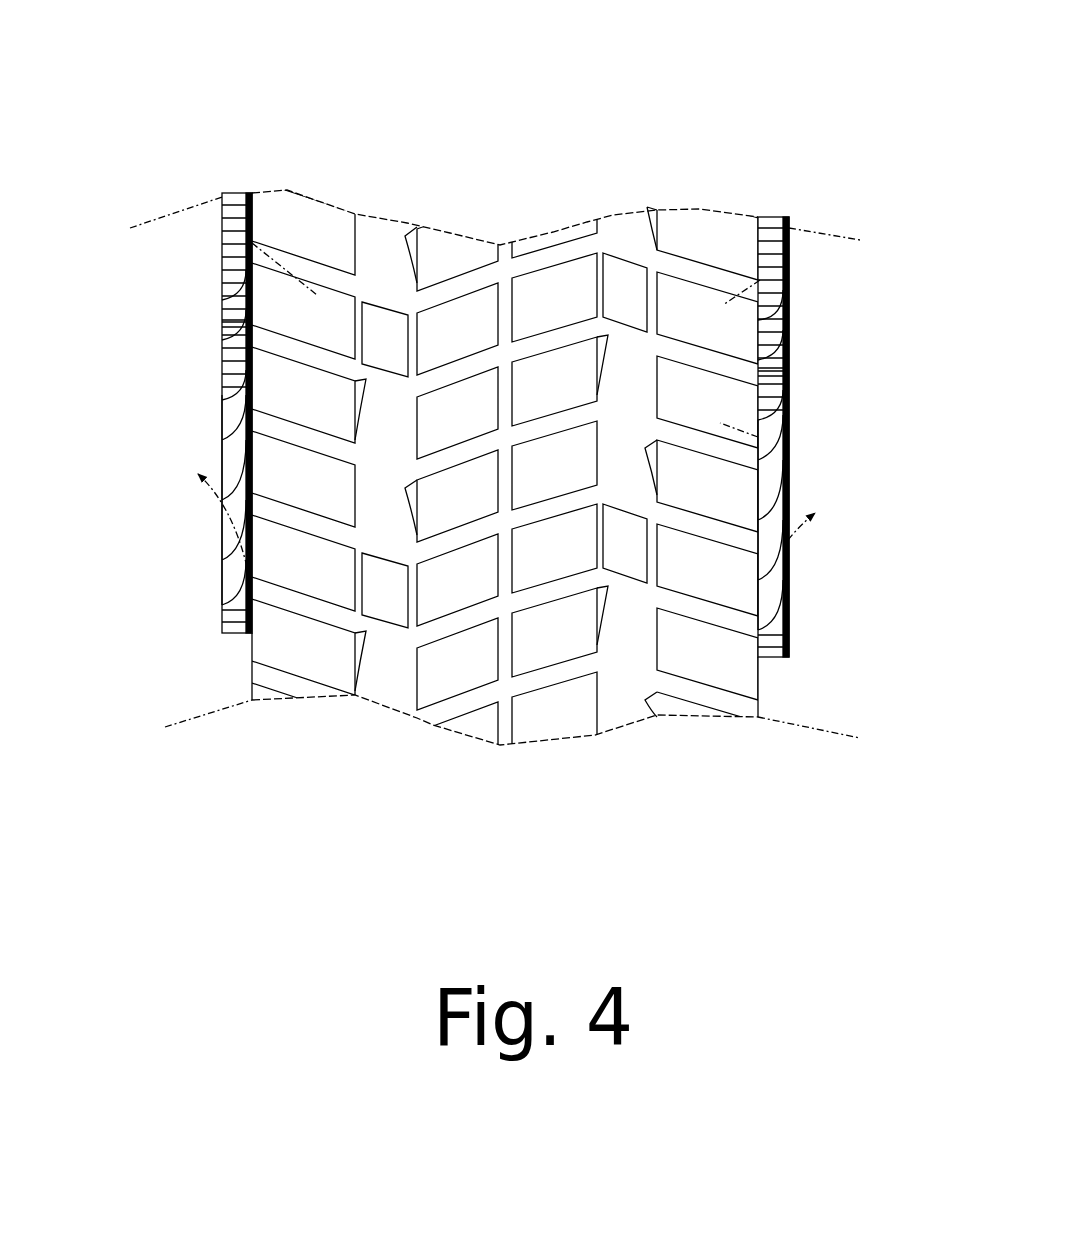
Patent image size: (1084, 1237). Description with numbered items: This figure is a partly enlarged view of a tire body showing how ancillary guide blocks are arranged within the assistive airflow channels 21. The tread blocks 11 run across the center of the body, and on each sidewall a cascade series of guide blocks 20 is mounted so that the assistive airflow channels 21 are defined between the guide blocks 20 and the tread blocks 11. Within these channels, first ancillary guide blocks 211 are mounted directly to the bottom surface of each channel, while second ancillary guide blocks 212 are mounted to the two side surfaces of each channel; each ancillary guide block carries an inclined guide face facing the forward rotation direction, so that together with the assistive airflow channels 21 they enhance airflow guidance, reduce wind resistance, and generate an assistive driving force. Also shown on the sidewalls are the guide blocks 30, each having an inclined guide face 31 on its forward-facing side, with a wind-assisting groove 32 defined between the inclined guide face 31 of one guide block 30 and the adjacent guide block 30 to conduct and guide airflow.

The tread blocks 11 is at (440, 687).
The guide blocks 20 is at (233, 207).
The assistive airflow channels 21 is at (382, 237).
The first ancillary guide blocks 211 is at (385, 603).
The second ancillary guide blocks 212 is at (408, 506).
The guide blocks 30 is at (226, 263).
The inclined guide face 31 is at (223, 277).
The wind-assisting groove 32 is at (222, 325).